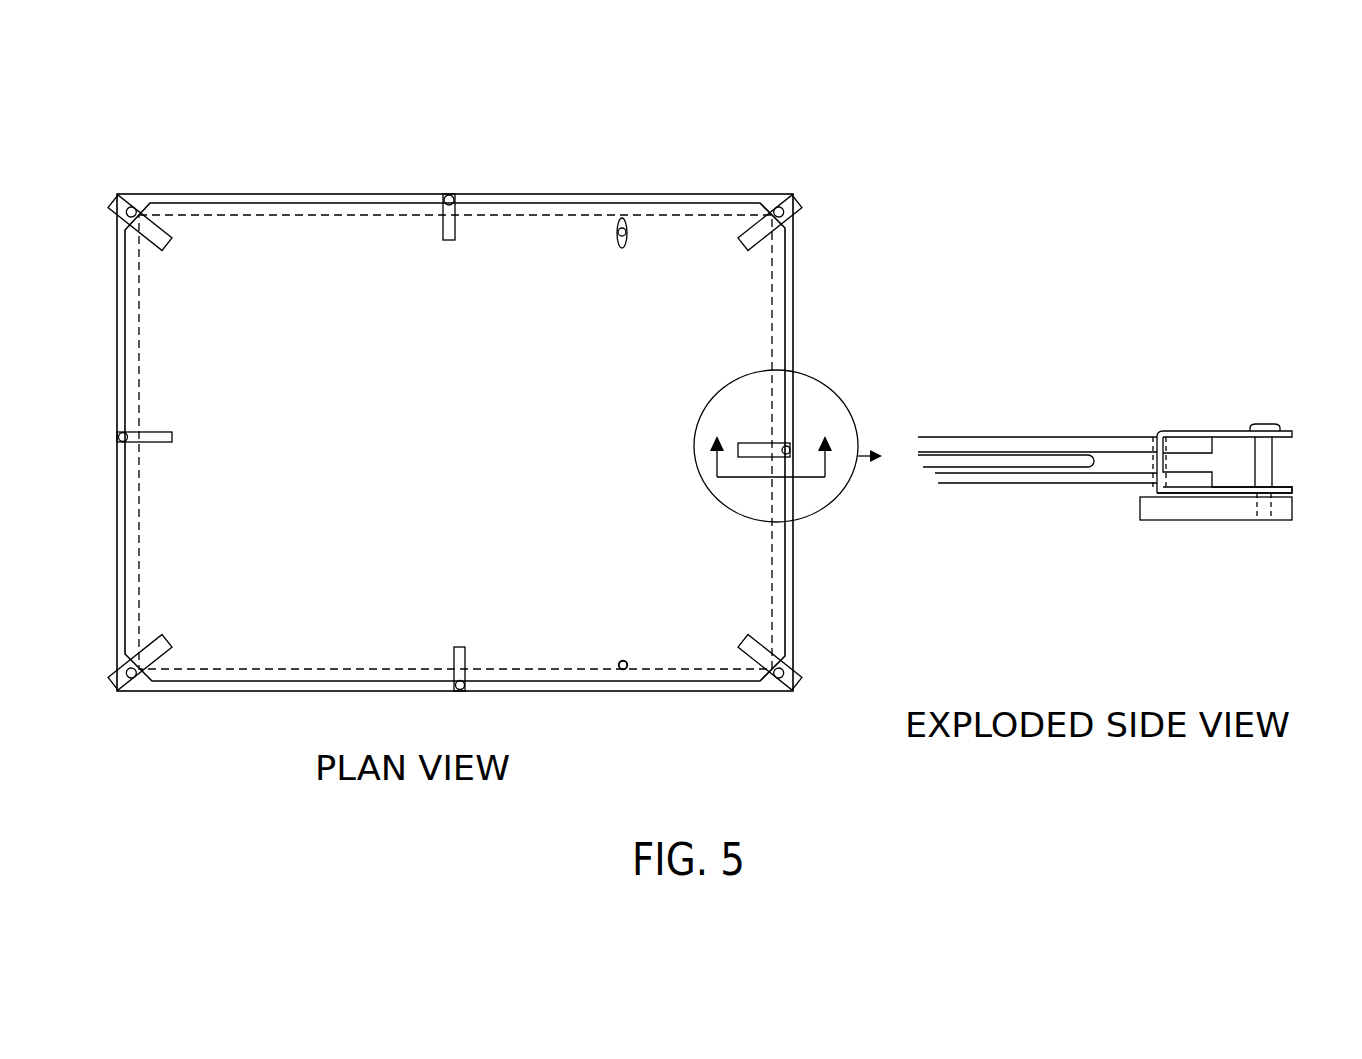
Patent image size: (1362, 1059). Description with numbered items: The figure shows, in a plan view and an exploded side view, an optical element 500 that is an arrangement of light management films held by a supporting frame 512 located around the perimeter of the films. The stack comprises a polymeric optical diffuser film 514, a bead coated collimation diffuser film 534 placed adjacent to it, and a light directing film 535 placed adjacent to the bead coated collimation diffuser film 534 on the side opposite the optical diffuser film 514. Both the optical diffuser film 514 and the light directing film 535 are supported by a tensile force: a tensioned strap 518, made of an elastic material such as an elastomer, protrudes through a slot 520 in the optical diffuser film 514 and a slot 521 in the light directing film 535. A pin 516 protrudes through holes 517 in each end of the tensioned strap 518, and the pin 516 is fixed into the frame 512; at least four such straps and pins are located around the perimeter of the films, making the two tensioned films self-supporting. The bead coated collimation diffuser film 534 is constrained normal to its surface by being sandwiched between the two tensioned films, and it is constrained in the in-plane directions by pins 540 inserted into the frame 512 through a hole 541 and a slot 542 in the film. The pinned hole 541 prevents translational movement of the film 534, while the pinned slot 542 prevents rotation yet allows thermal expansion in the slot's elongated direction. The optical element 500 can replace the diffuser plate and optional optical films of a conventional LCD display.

The optical element 500 is at (724, 90).
The supporting frame 512 is at (1155, 508).
The polymeric optical diffuser film 514 is at (1087, 476).
The pin 516 is at (1260, 437).
The holes 517 is at (1270, 437).
The tensioned strap 518 is at (1245, 488).
The slot 520 is at (1160, 491).
The slot 521 is at (1155, 478).
The bead coated collimation diffuser film 534 is at (1010, 466).
The light directing film 535 is at (1023, 436).
The pins 540 is at (615, 234).
The hole 541 is at (630, 660).
The slot 542 is at (628, 250).